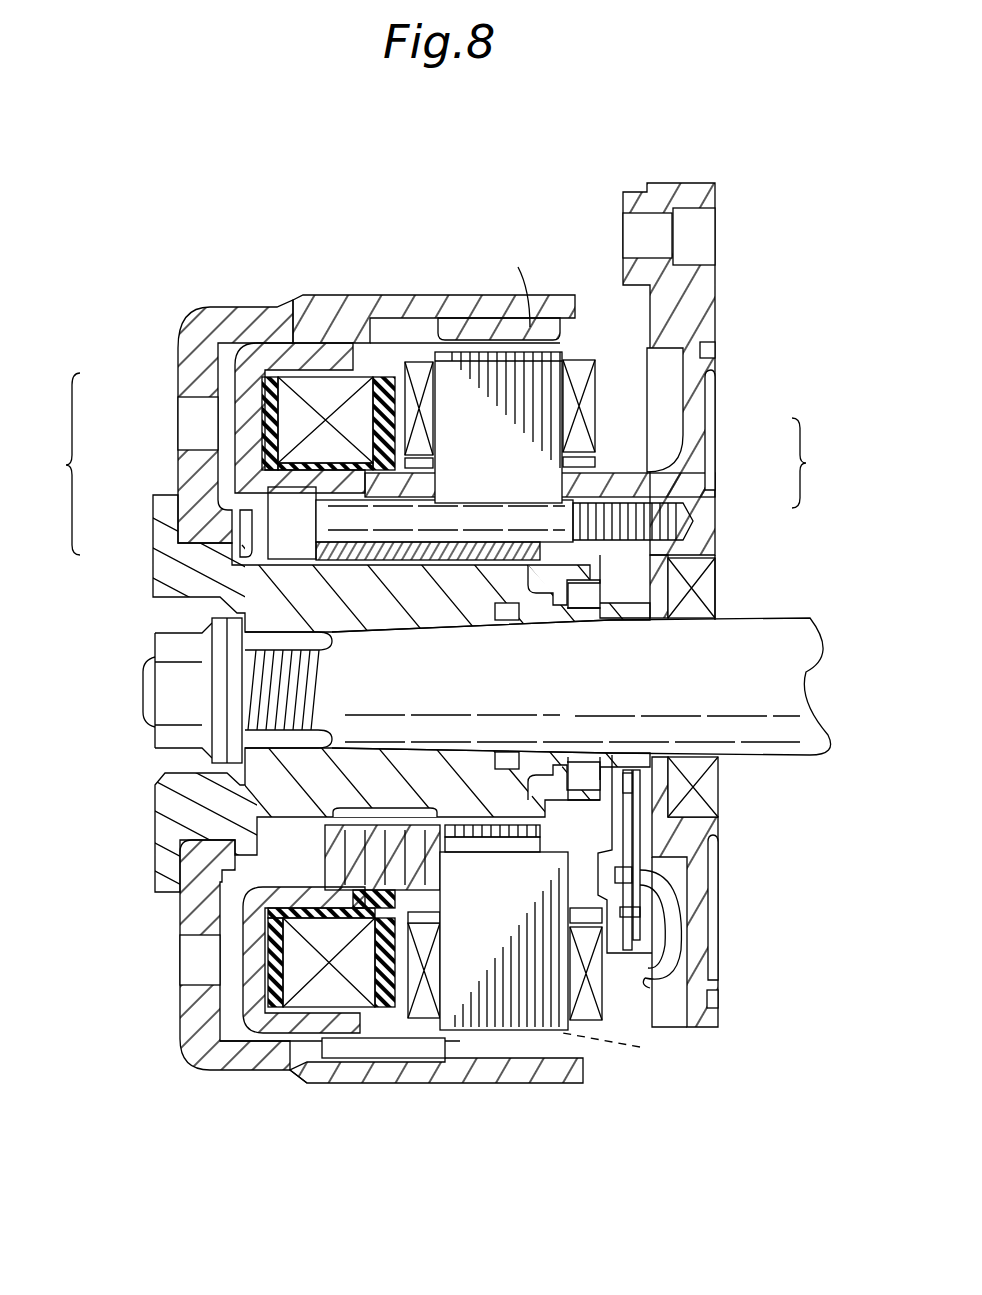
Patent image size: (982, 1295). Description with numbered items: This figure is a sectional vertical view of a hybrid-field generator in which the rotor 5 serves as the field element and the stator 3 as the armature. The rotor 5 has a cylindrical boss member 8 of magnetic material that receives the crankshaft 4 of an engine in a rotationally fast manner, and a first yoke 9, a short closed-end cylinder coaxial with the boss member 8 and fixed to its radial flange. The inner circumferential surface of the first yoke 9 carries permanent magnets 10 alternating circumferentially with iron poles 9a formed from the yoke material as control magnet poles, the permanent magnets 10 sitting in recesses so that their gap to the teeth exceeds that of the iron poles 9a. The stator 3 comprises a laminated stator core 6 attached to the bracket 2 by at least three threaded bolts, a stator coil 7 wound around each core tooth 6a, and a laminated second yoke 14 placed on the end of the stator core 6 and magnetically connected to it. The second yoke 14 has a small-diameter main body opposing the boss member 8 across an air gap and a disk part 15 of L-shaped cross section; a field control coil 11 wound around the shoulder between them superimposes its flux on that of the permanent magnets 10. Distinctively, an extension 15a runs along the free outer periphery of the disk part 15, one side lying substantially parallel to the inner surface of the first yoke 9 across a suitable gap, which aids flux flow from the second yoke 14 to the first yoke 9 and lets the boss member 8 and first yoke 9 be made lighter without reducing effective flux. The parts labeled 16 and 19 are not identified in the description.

The bracket 2 is at (707, 827).
The stator 3 is at (727, 401).
The crankshaft 4 is at (760, 628).
The rotor 5 is at (56, 464).
The stator core 6 is at (512, 473).
The core tooth 6a is at (444, 392).
The stator coil 7 is at (590, 397).
The boss member 8 is at (160, 560).
The first yoke 9 is at (188, 368).
The iron pole 9a is at (553, 342).
The permanent magnet 10 is at (588, 652).
The field control coil 11 is at (328, 380).
The second yoke 14 is at (353, 847).
The disk part 15 is at (247, 917).
The extension 15a is at (302, 1030).
The bearing holder 16 is at (241, 688).
The spacer 19 is at (292, 545).